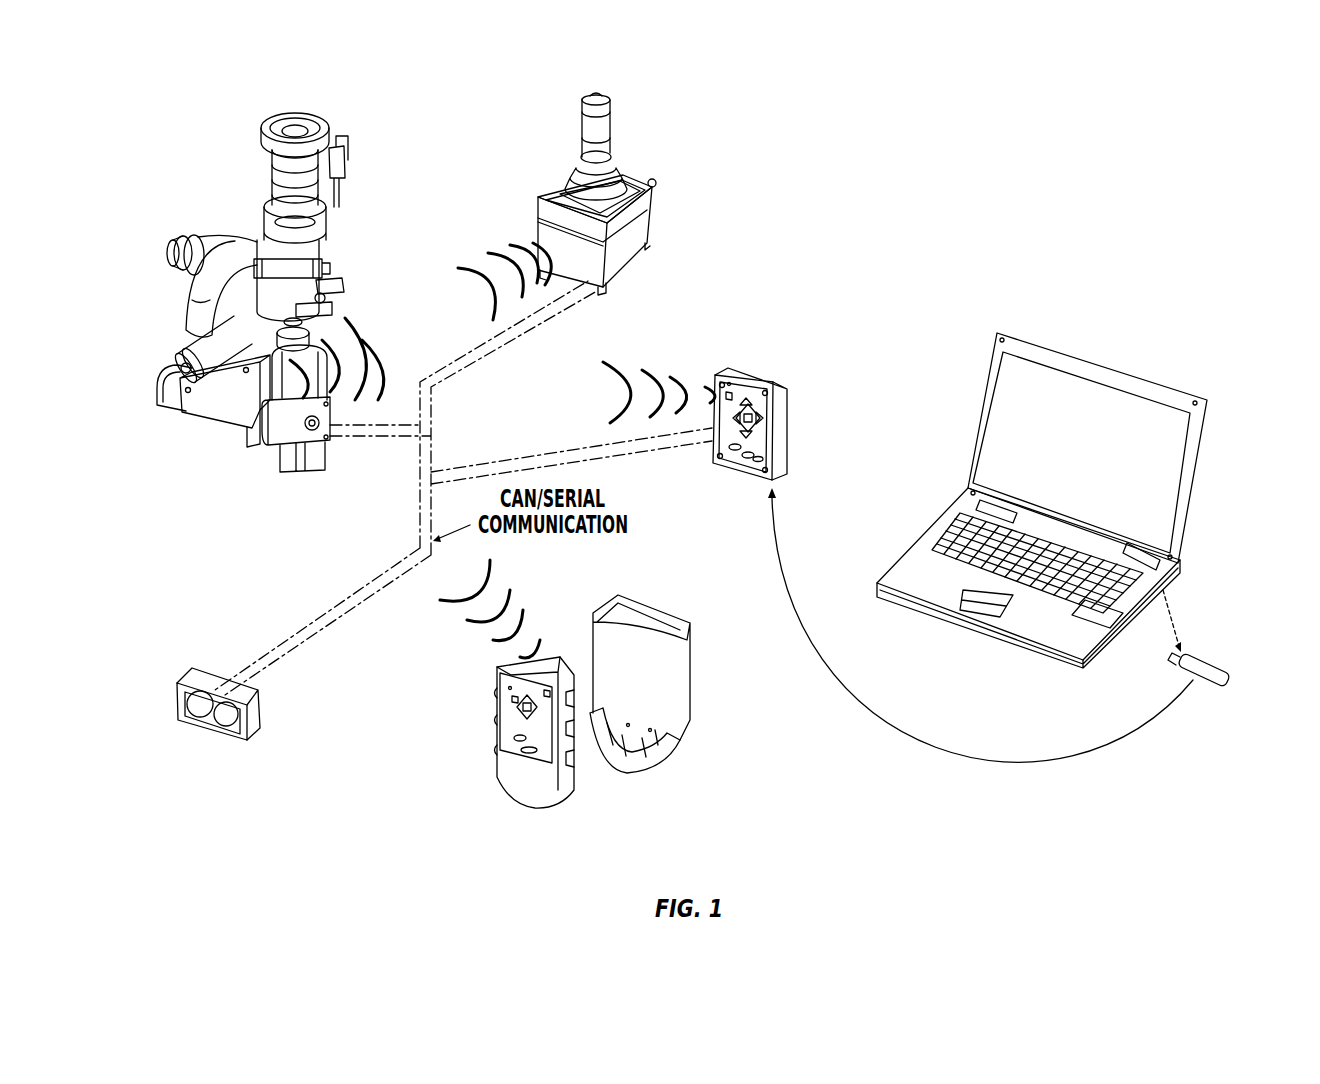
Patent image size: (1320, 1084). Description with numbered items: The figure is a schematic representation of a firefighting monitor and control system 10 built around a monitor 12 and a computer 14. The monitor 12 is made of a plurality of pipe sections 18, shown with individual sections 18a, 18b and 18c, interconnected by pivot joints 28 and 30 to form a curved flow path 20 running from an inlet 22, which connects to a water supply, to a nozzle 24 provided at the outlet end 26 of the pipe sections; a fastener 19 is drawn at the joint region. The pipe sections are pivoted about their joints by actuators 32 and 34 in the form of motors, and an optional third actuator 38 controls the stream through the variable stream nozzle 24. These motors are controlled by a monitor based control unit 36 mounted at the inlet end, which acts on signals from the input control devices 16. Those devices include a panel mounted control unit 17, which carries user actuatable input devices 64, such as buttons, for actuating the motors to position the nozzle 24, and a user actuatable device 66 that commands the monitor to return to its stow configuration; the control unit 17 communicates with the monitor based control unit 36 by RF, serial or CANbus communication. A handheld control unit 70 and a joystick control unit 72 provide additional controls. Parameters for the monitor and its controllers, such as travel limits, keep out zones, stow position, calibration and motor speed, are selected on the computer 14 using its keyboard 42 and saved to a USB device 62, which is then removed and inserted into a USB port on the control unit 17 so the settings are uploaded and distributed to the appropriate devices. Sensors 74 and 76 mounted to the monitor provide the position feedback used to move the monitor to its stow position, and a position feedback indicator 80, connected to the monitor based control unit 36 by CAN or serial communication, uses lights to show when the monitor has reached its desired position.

The firefighting monitor and control system 10 is at (880, 176).
The monitor 12 is at (388, 138).
The computer 14 is at (1069, 306).
The input control devices 16 is at (150, 375).
The panel mounted control unit 17 is at (794, 416).
The pipe sections 18 is at (218, 258).
The monitor body section 18a is at (318, 268).
The monitor inlet section 18b is at (183, 292).
The monitor base section 18c is at (319, 458).
The fastener 19 is at (318, 293).
The curved flow path 20 is at (318, 280).
The inlet 22 is at (278, 470).
The nozzle 24 is at (312, 120).
The outlet end 26 is at (265, 207).
The pivot joint 28 is at (353, 370).
The pivot joint 30 is at (304, 308).
The actuator 32 is at (170, 413).
The actuator 34 is at (177, 340).
The monitor based control unit 36 is at (228, 384).
The third actuator 38 is at (346, 165).
The computer keyboard 42 is at (953, 540).
The USB device 62 is at (1207, 668).
The user actuatable input devices 64 is at (762, 426).
The user actuatable device 66 is at (730, 372).
The handheld control unit 70 is at (489, 777).
The joystick control unit 72 is at (647, 210).
The sensor 74 is at (178, 240).
The sensor 76 is at (308, 338).
The position feedback indicator 80 is at (257, 714).